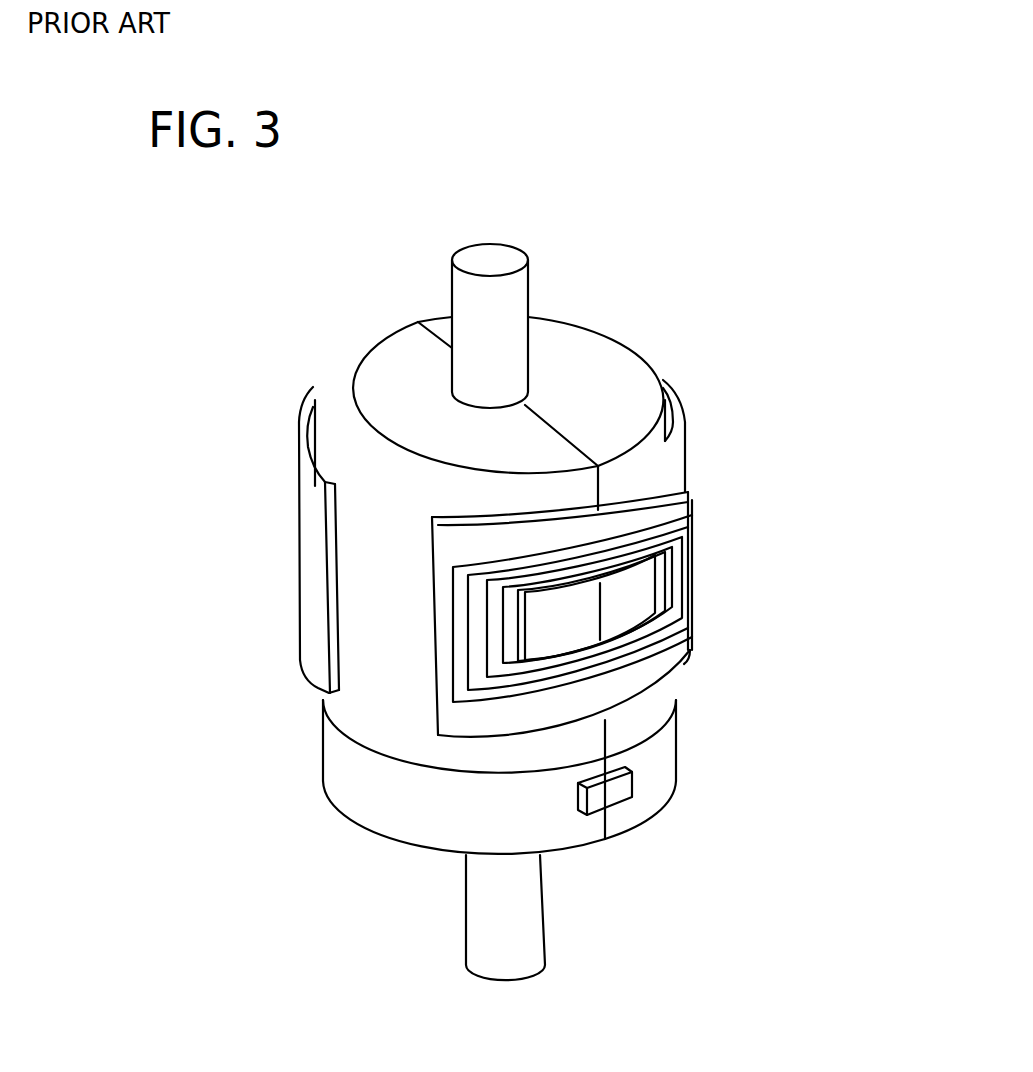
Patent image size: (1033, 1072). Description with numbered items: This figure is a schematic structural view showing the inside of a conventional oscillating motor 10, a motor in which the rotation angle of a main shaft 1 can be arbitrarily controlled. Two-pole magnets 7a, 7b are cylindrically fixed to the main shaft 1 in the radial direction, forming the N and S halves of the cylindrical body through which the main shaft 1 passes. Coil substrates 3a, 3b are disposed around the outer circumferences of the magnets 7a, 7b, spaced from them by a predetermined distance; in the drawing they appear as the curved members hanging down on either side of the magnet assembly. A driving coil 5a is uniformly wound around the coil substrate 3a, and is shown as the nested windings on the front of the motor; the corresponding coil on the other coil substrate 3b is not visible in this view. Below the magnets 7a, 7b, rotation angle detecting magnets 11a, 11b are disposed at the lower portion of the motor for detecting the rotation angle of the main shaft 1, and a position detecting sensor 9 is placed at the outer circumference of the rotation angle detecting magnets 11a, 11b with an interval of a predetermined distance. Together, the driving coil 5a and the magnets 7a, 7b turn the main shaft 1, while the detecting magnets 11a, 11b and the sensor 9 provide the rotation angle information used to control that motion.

The oscillating motor 10 is at (762, 233).
The main shaft 1 is at (529, 305).
The two-pole magnet 7a is at (666, 365).
The two-pole magnet 7b is at (330, 373).
The coil substrate 3a is at (687, 462).
The coil substrate 3b is at (300, 482).
The driving coil 5a is at (700, 563).
The position detecting sensor 9 is at (635, 797).
The rotation angle detecting magnet 11a is at (677, 757).
The rotation angle detecting magnet 11b is at (323, 768).